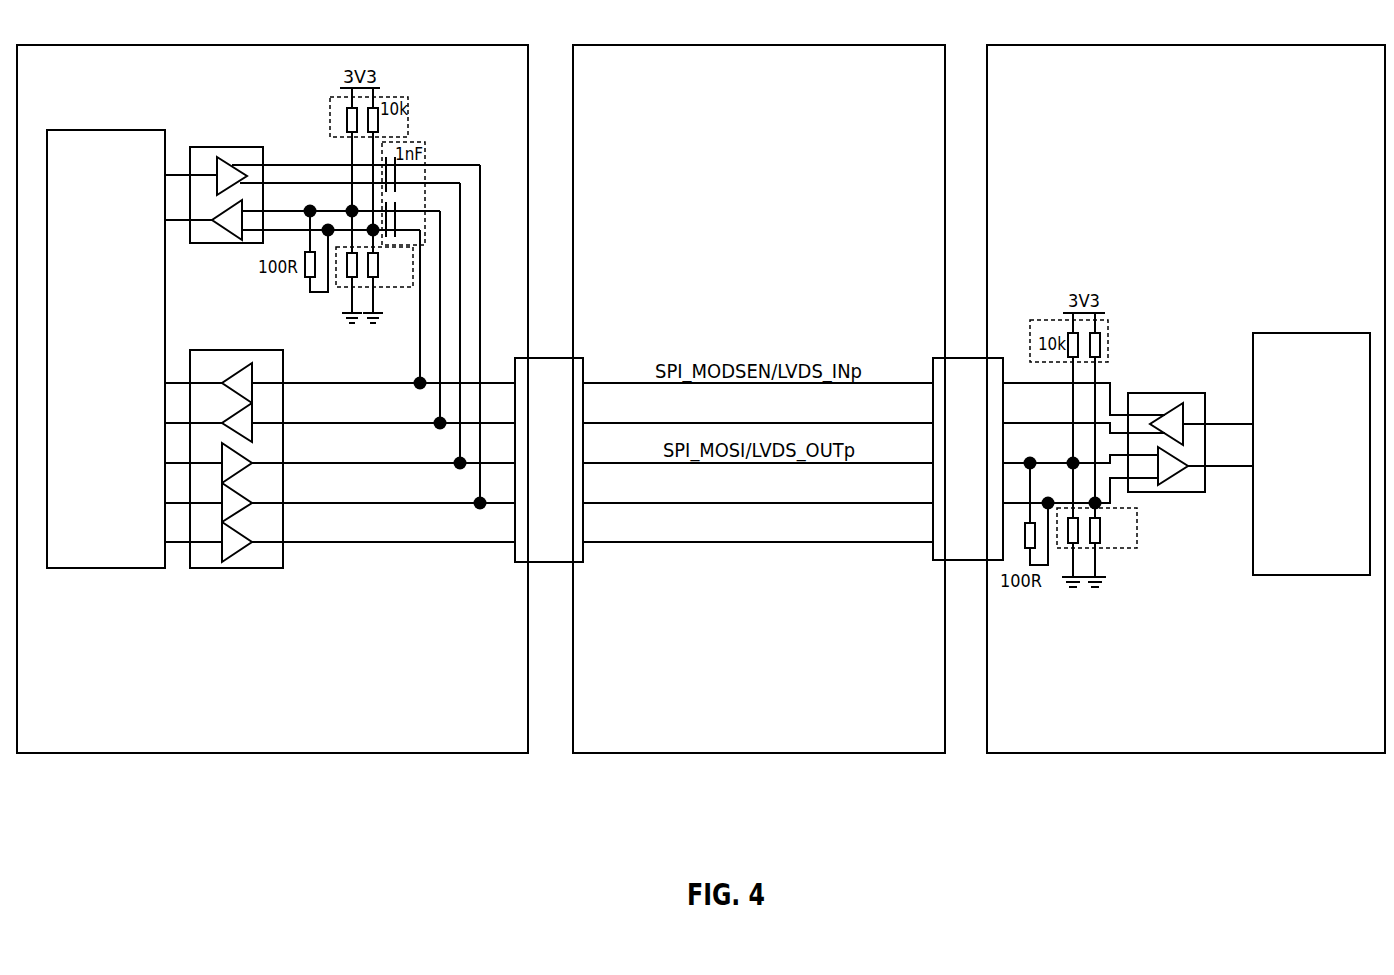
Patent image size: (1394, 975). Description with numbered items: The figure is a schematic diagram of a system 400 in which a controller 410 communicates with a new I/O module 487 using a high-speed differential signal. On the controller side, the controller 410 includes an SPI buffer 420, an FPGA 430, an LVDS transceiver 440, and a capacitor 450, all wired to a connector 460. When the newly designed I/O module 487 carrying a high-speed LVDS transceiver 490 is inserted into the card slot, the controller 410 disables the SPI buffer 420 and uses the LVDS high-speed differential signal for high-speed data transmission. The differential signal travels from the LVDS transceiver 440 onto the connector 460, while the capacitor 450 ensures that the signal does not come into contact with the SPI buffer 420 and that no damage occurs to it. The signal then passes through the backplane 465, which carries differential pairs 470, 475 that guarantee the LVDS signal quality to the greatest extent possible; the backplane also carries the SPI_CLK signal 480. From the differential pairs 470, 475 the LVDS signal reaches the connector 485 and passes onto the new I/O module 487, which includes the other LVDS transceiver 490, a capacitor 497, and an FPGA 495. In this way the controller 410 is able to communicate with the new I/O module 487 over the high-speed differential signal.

The system 400 is at (890, 32).
The controller 410 is at (260, 717).
The SPI buffer 420 is at (230, 600).
The FPGA 430 is at (135, 568).
The LVDS transceiver 440 is at (227, 247).
The capacitor 450 is at (410, 290).
The connector 460 is at (545, 562).
The backplane 465 is at (745, 715).
The differential pair 470 is at (883, 410).
The differential pair 475 is at (643, 482).
The SPI_CLK signal 480 is at (768, 542).
The connector 485 is at (953, 560).
The new I/O module 487 is at (1182, 717).
The LVDS transceiver 490 is at (1193, 493).
The FPGA 495 is at (1327, 575).
The capacitor 497 is at (1127, 550).